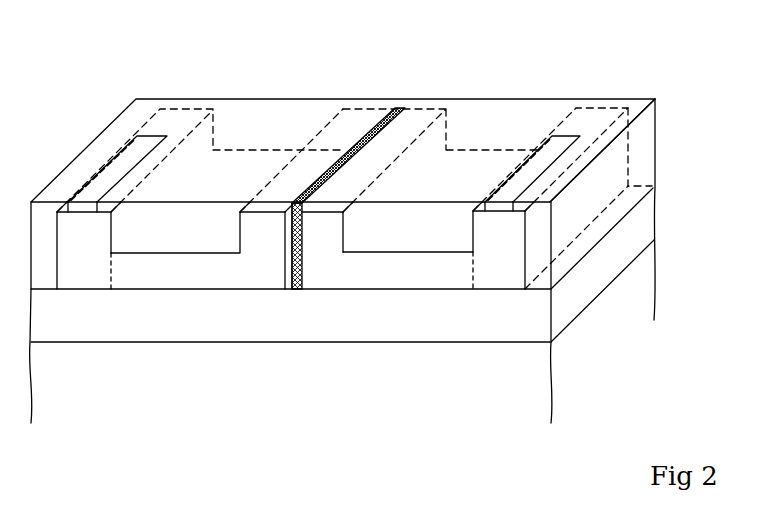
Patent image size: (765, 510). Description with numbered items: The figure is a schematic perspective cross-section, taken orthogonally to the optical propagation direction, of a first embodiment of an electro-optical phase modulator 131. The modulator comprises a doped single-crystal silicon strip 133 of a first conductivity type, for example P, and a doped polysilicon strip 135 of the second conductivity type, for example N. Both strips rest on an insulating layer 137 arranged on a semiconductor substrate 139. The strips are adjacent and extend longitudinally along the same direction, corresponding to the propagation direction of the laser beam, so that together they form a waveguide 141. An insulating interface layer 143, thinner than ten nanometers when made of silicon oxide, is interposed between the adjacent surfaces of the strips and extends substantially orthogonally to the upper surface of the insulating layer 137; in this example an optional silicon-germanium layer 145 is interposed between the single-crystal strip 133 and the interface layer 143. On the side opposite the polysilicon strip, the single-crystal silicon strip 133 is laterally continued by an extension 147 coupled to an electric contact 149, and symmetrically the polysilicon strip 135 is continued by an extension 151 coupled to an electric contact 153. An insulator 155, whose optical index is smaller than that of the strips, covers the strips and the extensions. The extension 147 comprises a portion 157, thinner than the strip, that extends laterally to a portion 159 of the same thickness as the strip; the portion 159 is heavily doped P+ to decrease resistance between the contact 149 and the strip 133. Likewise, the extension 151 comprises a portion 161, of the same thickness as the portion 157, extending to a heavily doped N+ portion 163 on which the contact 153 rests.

The modulator 131 is at (249, 70).
The doped single-crystal silicon strip 133 is at (417, 110).
The doped polysilicon strip 135 is at (363, 112).
The insulating layer 137 is at (643, 220).
The semiconductor substrate 139 is at (637, 293).
The waveguide 141 is at (440, 50).
The insulating interface layer 143 is at (288, 285).
The silicon-germanium layer 145 is at (297, 285).
The extension 147 is at (492, 383).
The electric contact 149 is at (548, 138).
The extension 151 is at (152, 383).
The electric contact 153 is at (150, 136).
The insulator 155 is at (643, 133).
The portion 157 is at (435, 283).
The portion 159 is at (500, 280).
The portion 161 is at (160, 282).
The portion 163 is at (92, 283).